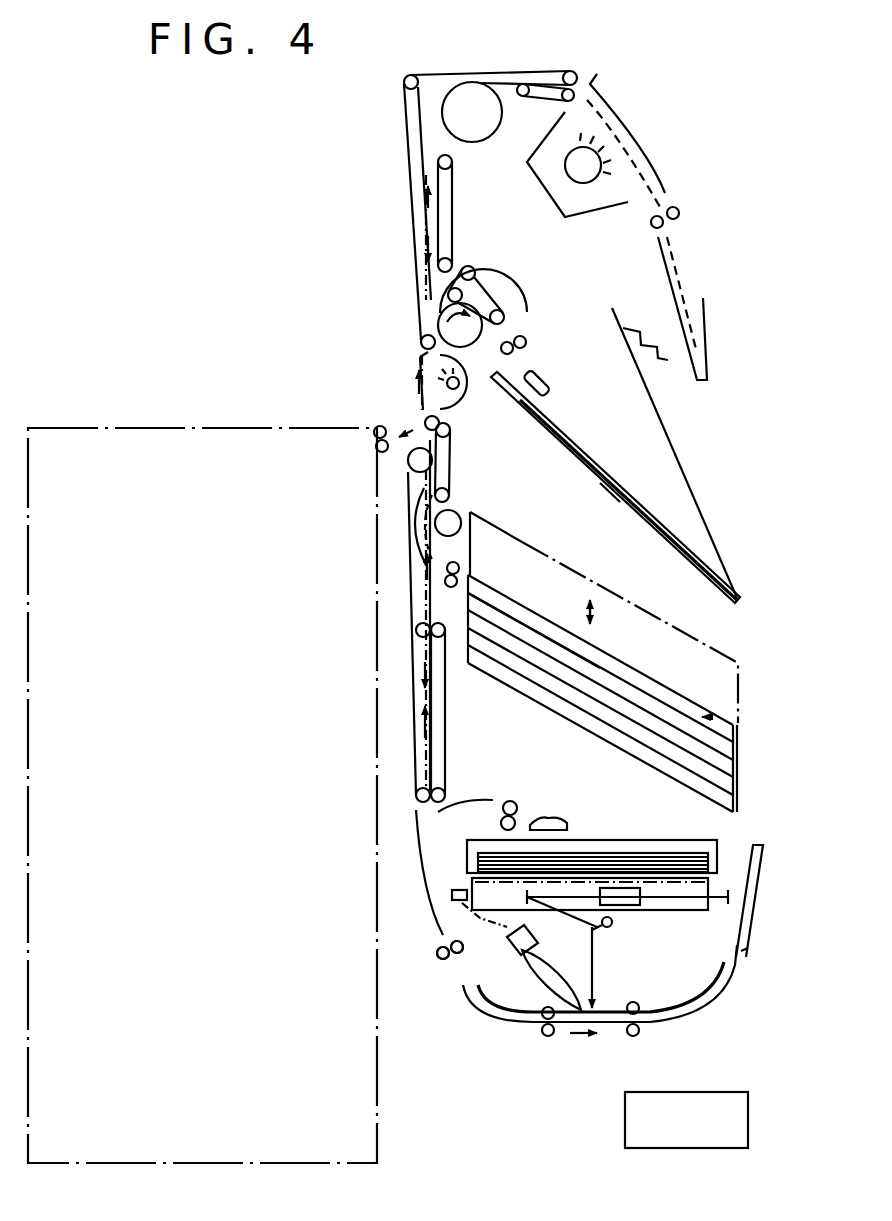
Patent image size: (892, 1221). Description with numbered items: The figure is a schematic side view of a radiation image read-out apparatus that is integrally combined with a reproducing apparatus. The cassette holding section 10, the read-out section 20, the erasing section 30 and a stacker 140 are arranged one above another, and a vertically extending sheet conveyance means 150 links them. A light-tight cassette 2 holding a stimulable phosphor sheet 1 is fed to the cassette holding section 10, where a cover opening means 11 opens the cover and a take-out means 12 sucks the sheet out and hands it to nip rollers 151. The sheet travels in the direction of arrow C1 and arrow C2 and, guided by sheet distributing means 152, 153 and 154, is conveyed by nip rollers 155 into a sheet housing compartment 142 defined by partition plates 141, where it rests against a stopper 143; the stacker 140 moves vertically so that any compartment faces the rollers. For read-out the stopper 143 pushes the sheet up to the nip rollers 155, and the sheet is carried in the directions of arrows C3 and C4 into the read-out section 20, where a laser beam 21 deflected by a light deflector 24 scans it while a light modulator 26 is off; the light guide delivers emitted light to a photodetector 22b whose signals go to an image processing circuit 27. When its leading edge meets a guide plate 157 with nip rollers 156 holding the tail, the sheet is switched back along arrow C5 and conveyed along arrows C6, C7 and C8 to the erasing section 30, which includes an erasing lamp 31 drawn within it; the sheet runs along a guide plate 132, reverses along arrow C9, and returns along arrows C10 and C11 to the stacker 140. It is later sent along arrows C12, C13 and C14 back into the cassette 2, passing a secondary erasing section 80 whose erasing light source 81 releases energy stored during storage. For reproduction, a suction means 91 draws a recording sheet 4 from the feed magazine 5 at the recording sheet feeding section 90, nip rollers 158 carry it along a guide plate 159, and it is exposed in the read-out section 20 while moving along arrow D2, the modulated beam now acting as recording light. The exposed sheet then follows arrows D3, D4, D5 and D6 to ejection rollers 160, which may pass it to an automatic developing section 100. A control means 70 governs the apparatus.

The automatic developing section 100 is at (168, 418).
The sheet conveyance means 150 is at (472, 72).
The arrow C8 is at (424, 205).
The arrow C10 is at (427, 242).
The sheet distributing means 152 is at (430, 289).
The arrow C2 is at (436, 328).
The arrow C13 is at (416, 393).
The arrow D6 is at (405, 430).
The ejection rollers 160 is at (376, 447).
The sheet distributing means 153 is at (409, 463).
The erasing light source 81 is at (458, 389).
The secondary erasing section 80 is at (482, 398).
The arrow C11 is at (458, 458).
The arrow C12 is at (440, 506).
The sheet distributing means 154 is at (412, 548).
The arrow D5 is at (423, 580).
The arrow C7 is at (383, 575).
The nip rollers 155 is at (458, 562).
The arrow C3 is at (423, 660).
The arrow D4 is at (423, 738).
The guide plate 159 is at (462, 800).
The nip rollers 158 is at (512, 802).
The suction means 91 is at (553, 826).
The image processing circuit 27 is at (452, 893).
The arrow C4 is at (421, 913).
The arrow C6 is at (441, 974).
The arrow D3 is at (447, 990).
The photodetector 22b is at (515, 941).
The arrow D2 is at (578, 1038).
The nip rollers 156 is at (636, 1040).
The control means 70 is at (705, 1092).
The stimulating rays 21 is at (595, 972).
The read-out section 20 is at (635, 968).
The light deflector 24 is at (612, 926).
The light modulator 26 is at (642, 905).
The recording sheet feed magazine 5 is at (662, 840).
The recording sheet 4 is at (605, 853).
The recording sheet feeding section 90 is at (732, 832).
The guide plate 157 is at (757, 913).
The arrow C5 is at (743, 943).
The stacker 140 is at (572, 738).
The partition plate 141 is at (510, 600).
The sheet housing compartment 142 is at (553, 628).
The stopper 143 is at (742, 736).
The stimulable phosphor sheet 1 is at (574, 441).
The cassette 2 is at (612, 488).
The cassette holding section 10 is at (708, 488).
The cover opening means 11 is at (664, 361).
The guide plate 132 is at (708, 345).
The arrow C9 is at (688, 240).
The stimulable phosphor sheet take-out means 12 is at (552, 383).
The nip rollers 151 is at (527, 343).
The arrow C14 is at (522, 313).
The arrow C1 is at (480, 296).
The erasing section 30 is at (546, 204).
The lamp 31 is at (583, 183).